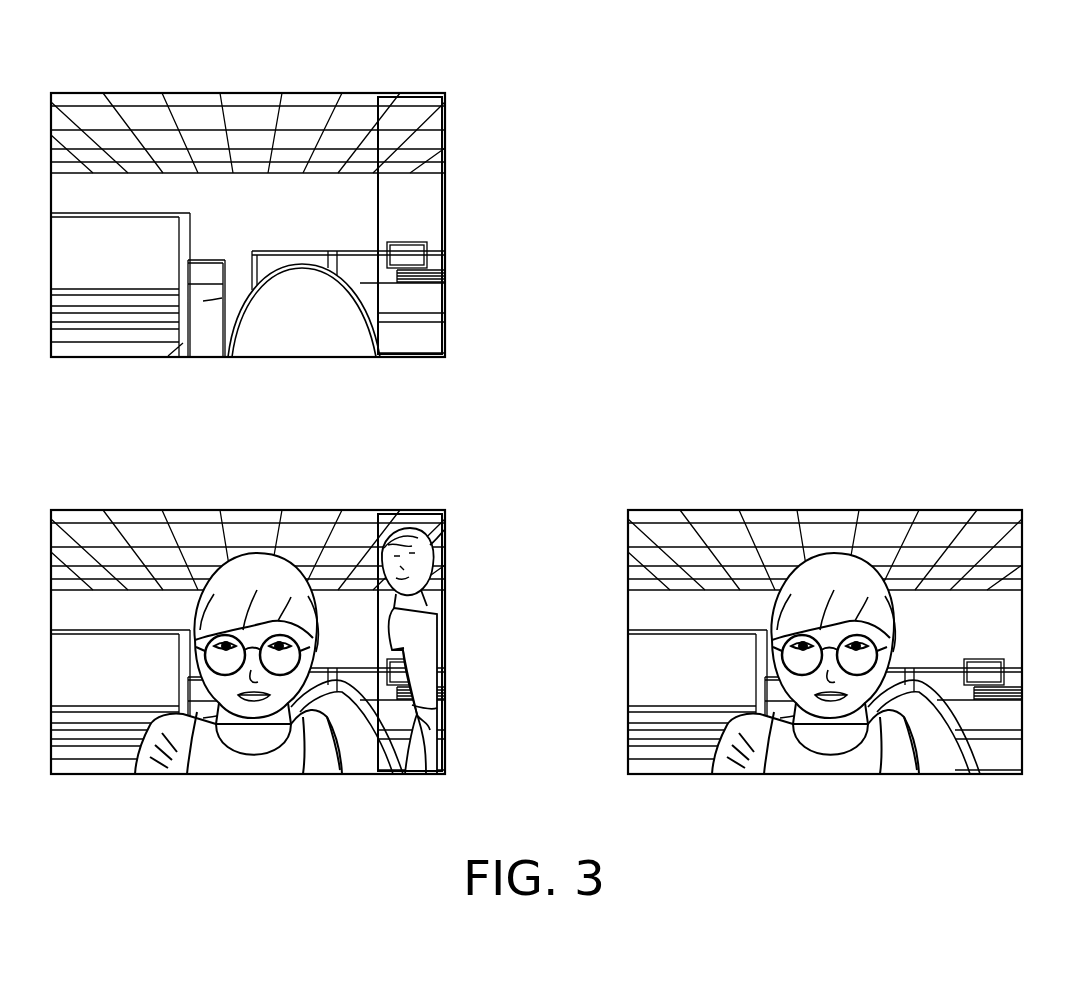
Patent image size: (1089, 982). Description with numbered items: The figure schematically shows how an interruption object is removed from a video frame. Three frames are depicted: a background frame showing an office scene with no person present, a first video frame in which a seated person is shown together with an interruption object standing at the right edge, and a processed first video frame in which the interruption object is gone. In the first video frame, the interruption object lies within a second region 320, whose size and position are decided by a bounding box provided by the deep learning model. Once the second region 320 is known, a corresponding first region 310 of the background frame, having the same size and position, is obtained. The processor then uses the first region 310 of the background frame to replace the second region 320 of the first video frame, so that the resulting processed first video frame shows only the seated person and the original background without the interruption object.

The first region 310 is at (446, 202).
The second region 320 is at (446, 617).